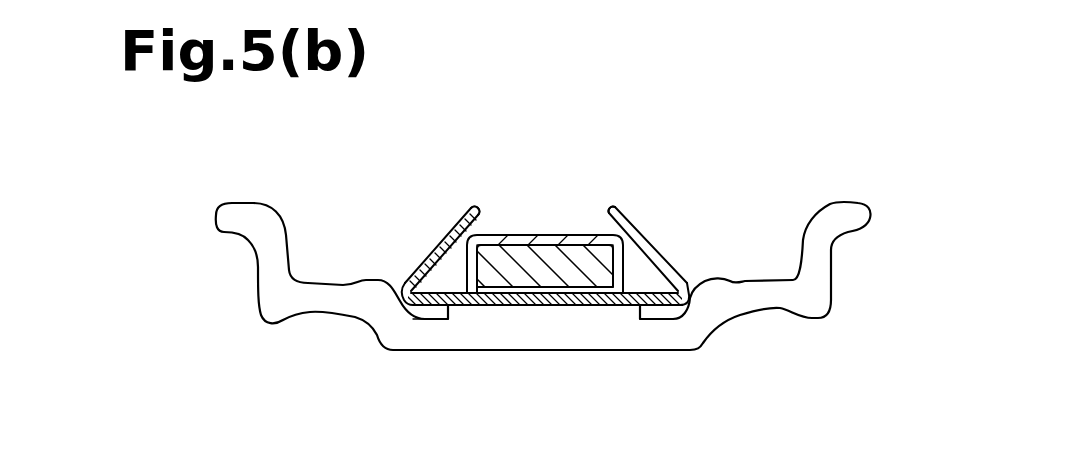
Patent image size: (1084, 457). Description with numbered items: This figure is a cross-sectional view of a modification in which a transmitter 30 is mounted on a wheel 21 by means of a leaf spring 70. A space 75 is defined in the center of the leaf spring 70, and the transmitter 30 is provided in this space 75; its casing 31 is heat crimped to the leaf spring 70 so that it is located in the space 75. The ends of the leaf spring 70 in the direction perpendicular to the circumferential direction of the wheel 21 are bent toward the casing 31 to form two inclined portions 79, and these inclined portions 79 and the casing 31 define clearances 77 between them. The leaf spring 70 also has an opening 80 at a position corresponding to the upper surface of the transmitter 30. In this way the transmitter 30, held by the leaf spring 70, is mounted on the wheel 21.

The wheel 21 is at (763, 309).
The transmitter 30 is at (516, 234).
The casing 31 is at (553, 233).
The leaf spring 70 is at (547, 313).
The space 75 is at (467, 290).
The clearances 77 is at (478, 207).
The inclined portions 79 is at (435, 252).
The opening 80 is at (558, 215).